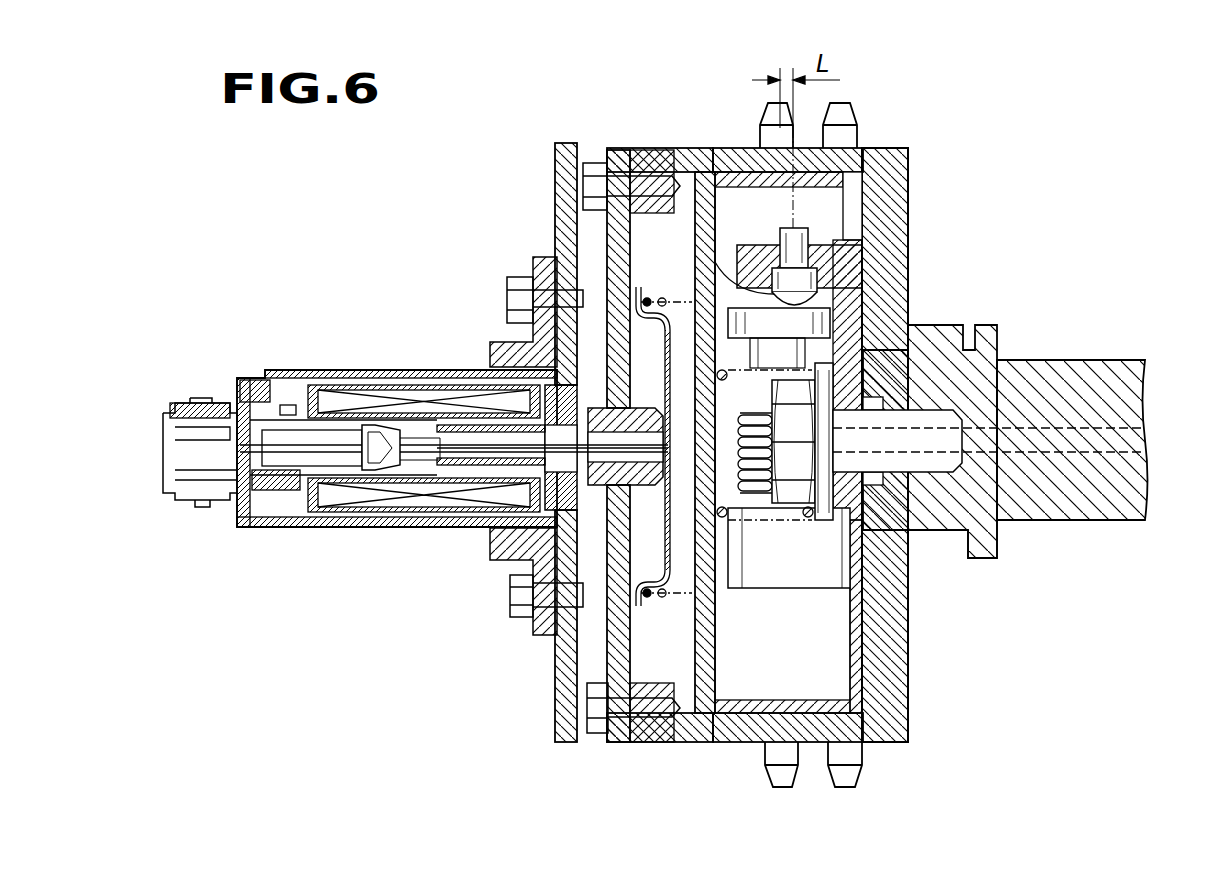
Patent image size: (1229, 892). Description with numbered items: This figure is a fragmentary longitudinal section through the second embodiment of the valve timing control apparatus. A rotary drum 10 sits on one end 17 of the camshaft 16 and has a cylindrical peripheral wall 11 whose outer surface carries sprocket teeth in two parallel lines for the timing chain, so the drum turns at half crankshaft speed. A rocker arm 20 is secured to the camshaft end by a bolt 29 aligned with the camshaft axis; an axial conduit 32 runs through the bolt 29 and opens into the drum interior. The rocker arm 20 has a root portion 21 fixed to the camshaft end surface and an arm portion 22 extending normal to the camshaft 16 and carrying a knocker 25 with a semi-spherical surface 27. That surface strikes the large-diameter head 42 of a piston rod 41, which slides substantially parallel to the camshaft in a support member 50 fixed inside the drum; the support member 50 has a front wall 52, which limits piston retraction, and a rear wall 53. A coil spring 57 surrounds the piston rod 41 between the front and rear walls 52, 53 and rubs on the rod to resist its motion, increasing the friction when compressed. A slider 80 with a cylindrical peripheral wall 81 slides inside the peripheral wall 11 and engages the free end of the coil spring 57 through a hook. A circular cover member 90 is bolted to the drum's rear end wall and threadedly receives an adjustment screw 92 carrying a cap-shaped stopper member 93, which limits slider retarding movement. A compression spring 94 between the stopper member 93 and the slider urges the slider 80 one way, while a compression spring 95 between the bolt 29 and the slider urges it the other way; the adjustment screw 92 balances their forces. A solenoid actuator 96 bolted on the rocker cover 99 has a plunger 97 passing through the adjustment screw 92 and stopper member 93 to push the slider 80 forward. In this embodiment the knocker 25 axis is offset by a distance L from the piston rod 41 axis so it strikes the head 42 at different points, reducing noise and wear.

The rotary drum 10 is at (922, 178).
The cylindrical peripheral wall 11 is at (905, 160).
The camshaft 16 is at (1122, 410).
The end of camshaft 17 is at (938, 508).
The rocker arm 20 is at (955, 558).
The root portion 21 is at (866, 520).
The arm portion 22 is at (833, 233).
The knocker 25 is at (787, 235).
The semi-spherical surface 27 is at (776, 308).
The bolt 29 is at (793, 398).
The axial conduit 32 is at (940, 435).
The piston rod 41 is at (825, 365).
The large-diameter head 42 is at (704, 320).
The support member 50 is at (806, 591).
The front wall 52 is at (776, 408).
The rear wall 53 is at (780, 575).
The coil spring 57 is at (740, 512).
The slider 80 is at (698, 662).
The cylindrical peripheral wall 81 is at (868, 165).
The circular cover member 90 is at (617, 222).
The adjustment screw 92 is at (525, 340).
The cap-shaped stopper member 93 is at (655, 545).
The compression spring 94 is at (642, 297).
The compression spring 95 is at (588, 612).
The solenoid actuator 96 is at (347, 364).
The plunger 97 is at (465, 440).
The rocker cover 99 is at (566, 176).